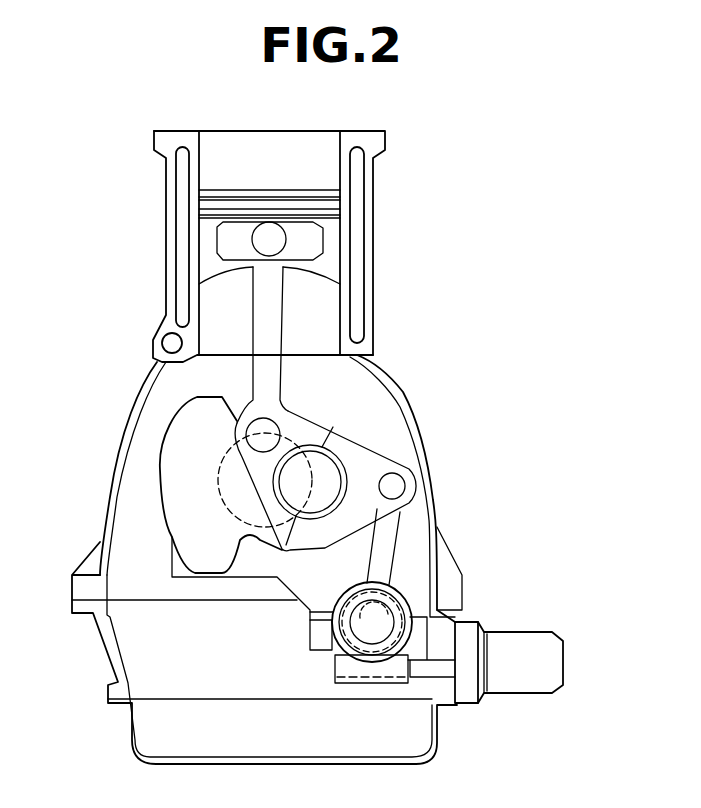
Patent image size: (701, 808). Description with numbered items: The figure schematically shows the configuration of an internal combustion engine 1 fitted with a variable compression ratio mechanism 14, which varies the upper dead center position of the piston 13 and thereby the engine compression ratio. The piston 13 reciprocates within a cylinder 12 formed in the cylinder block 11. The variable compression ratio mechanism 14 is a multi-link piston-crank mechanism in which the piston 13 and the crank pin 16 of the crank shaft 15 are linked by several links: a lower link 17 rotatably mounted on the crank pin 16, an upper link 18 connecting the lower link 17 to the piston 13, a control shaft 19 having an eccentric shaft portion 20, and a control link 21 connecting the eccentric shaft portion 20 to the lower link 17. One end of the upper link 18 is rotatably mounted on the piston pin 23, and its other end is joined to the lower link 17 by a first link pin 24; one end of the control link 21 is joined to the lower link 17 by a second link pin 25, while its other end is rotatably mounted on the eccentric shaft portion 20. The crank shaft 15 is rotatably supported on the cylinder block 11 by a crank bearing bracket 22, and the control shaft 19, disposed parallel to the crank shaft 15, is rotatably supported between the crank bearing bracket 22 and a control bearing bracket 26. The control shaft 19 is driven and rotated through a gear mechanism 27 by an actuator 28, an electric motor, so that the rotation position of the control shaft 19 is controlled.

The internal combustion engine 1 is at (432, 183).
The cylinder block 11 is at (173, 262).
The cylinder 12 is at (202, 167).
The piston 13 is at (330, 240).
The variable compression ratio mechanism 14 is at (358, 387).
The crank shaft 15 is at (218, 487).
The crank pin 16 is at (327, 473).
The lower link 17 is at (343, 442).
The upper link 18 is at (265, 306).
The control shaft 19 is at (393, 621).
The eccentric shaft portion 20 is at (397, 607).
The control link 21 is at (383, 538).
The crank bearing bracket 22 is at (260, 560).
The piston pin 23 is at (262, 240).
The first link pin 24 is at (262, 427).
The second link pin 25 is at (397, 486).
The control bearing bracket 26 is at (320, 635).
The gear mechanism 27 is at (327, 681).
The actuator 28 is at (545, 660).